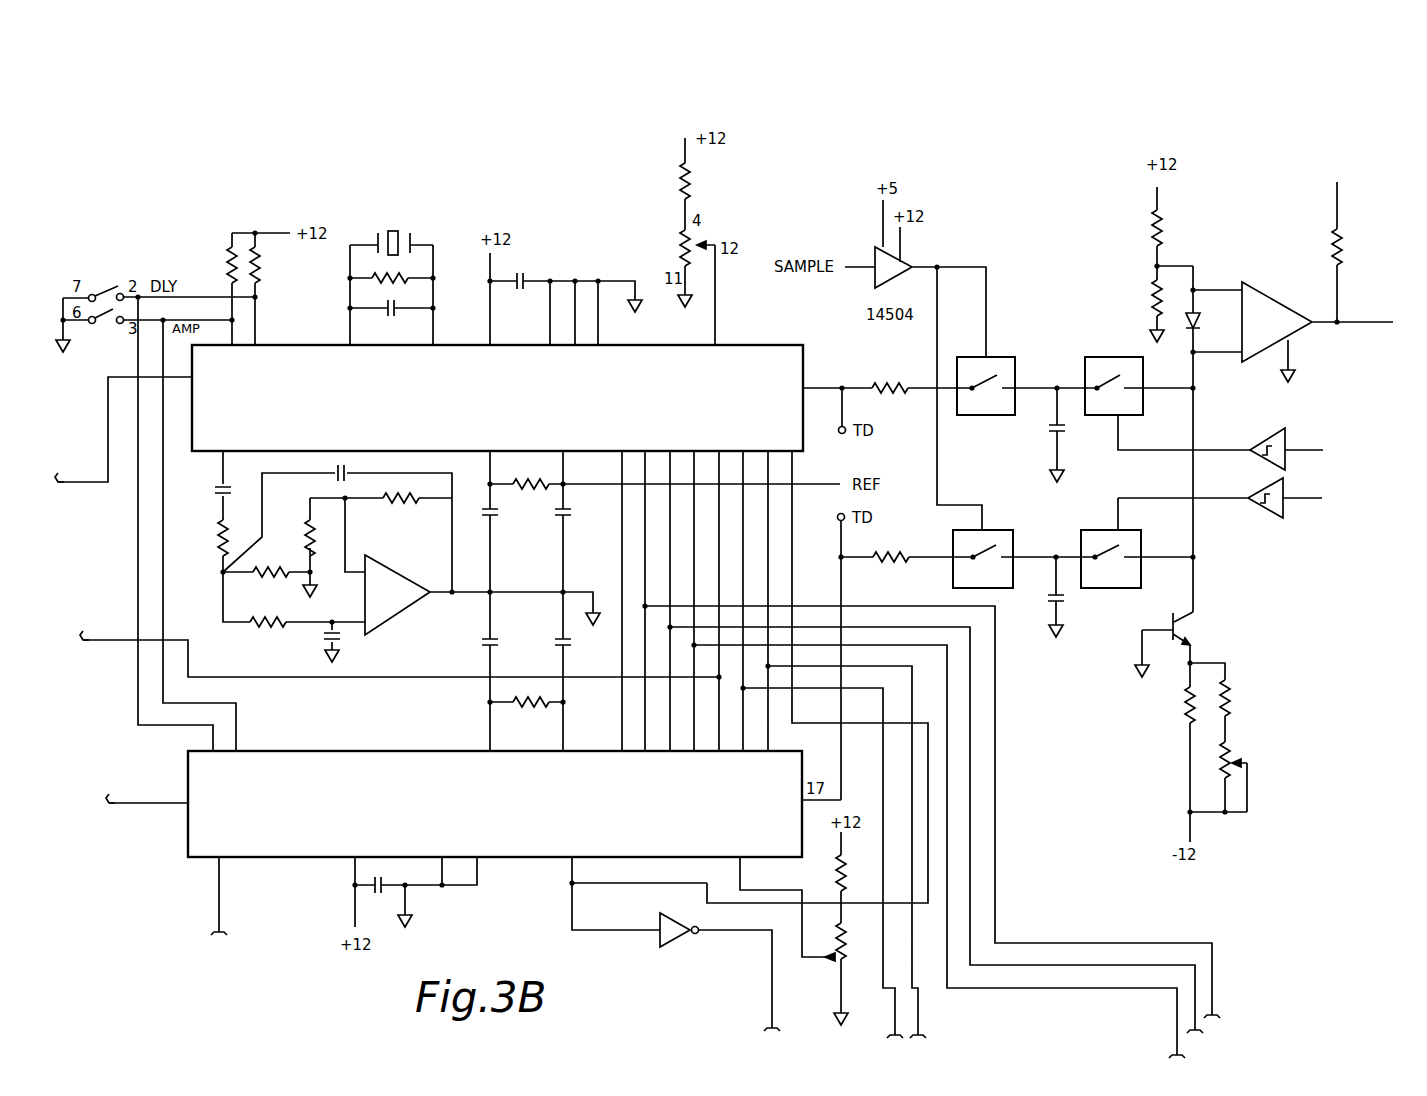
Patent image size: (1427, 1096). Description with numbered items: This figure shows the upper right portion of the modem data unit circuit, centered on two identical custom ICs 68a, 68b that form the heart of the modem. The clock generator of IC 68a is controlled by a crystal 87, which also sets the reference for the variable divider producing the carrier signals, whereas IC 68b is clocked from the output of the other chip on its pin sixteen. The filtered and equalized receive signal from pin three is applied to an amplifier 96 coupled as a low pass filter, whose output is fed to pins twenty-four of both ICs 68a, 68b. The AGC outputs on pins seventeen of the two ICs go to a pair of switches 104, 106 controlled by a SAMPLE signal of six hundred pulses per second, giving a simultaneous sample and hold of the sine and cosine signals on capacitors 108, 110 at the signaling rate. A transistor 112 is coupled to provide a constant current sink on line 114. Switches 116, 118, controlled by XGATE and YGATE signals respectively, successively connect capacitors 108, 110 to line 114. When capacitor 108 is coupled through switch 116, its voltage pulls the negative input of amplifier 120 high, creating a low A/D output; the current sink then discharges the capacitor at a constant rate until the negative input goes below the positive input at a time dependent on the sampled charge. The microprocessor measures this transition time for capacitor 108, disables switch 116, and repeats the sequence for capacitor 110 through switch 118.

The crystal 87 is at (410, 236).
The custom IC 68a is at (782, 344).
The custom IC 68b is at (394, 751).
The amplifier 96 is at (420, 603).
The switch 104 is at (1008, 357).
The switch 106 is at (952, 576).
The capacitor 108 is at (1064, 434).
The capacitor 110 is at (1052, 604).
The transistor 112 is at (1180, 624).
The line 114 is at (1193, 430).
The switch 116 is at (1118, 357).
The switch 118 is at (1104, 588).
The amplifier 120 is at (1304, 330).